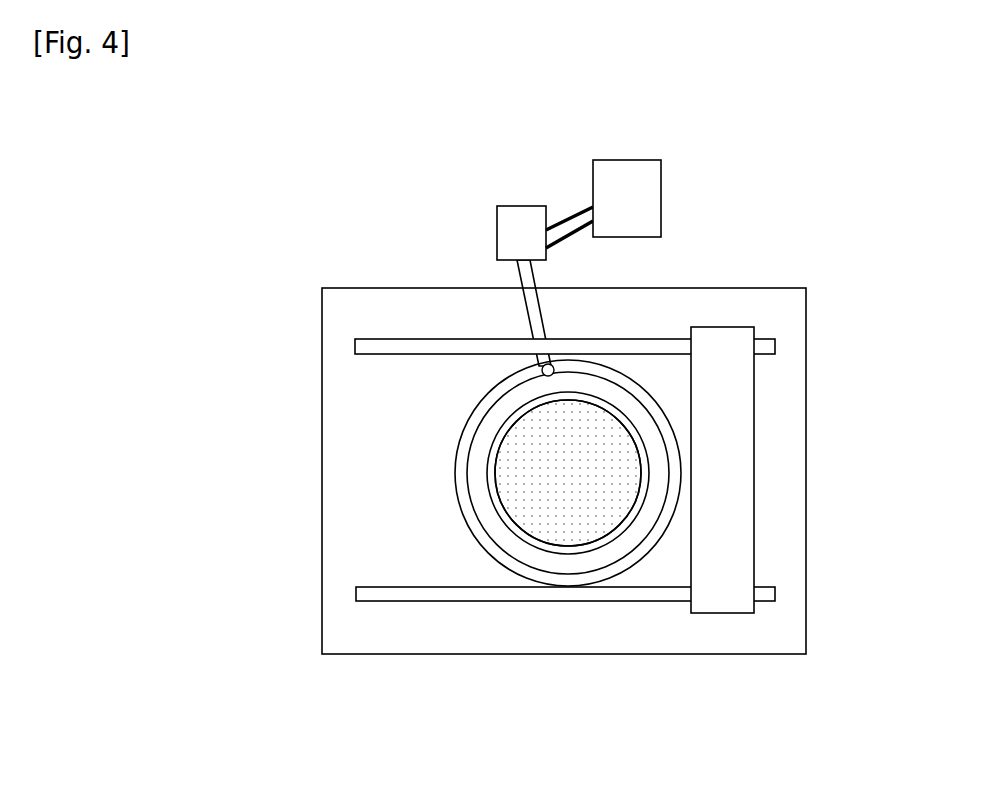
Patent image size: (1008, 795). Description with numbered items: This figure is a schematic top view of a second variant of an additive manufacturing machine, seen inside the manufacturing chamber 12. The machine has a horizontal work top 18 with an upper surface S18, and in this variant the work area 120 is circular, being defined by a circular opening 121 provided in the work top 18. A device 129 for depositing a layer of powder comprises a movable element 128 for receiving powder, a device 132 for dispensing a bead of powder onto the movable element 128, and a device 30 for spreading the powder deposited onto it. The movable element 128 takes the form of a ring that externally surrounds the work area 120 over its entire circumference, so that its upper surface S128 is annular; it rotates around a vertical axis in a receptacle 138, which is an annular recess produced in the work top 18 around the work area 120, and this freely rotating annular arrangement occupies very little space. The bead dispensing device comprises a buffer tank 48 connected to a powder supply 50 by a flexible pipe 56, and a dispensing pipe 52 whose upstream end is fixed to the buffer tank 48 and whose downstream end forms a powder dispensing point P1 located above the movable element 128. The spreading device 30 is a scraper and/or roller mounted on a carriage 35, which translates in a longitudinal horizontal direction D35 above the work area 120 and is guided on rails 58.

The manufacturing chamber 12 is at (808, 318).
The horizontal work top 18 is at (386, 482).
The upper surface of the work top S18 is at (360, 430).
The spreading device 30 is at (754, 523).
The carriage 35 is at (733, 448).
The longitudinal horizontal direction D35 is at (415, 720).
The buffer tank 48 is at (510, 221).
The powder supply 50 is at (610, 177).
The dispensing pipe 52 is at (535, 310).
The flexible pipe 56 is at (572, 241).
The rails 58 is at (383, 347).
The work area 120 is at (577, 513).
The opening 121 is at (565, 548).
The movable element 128 is at (529, 548).
The upper surface of the movable element S128 is at (482, 505).
The device for depositing a layer of powder 129 is at (552, 215).
The device for dispensing a bead of powder 132 is at (661, 197).
The receptacle 138 is at (490, 552).
The powder dispensing point P1 is at (542, 372).